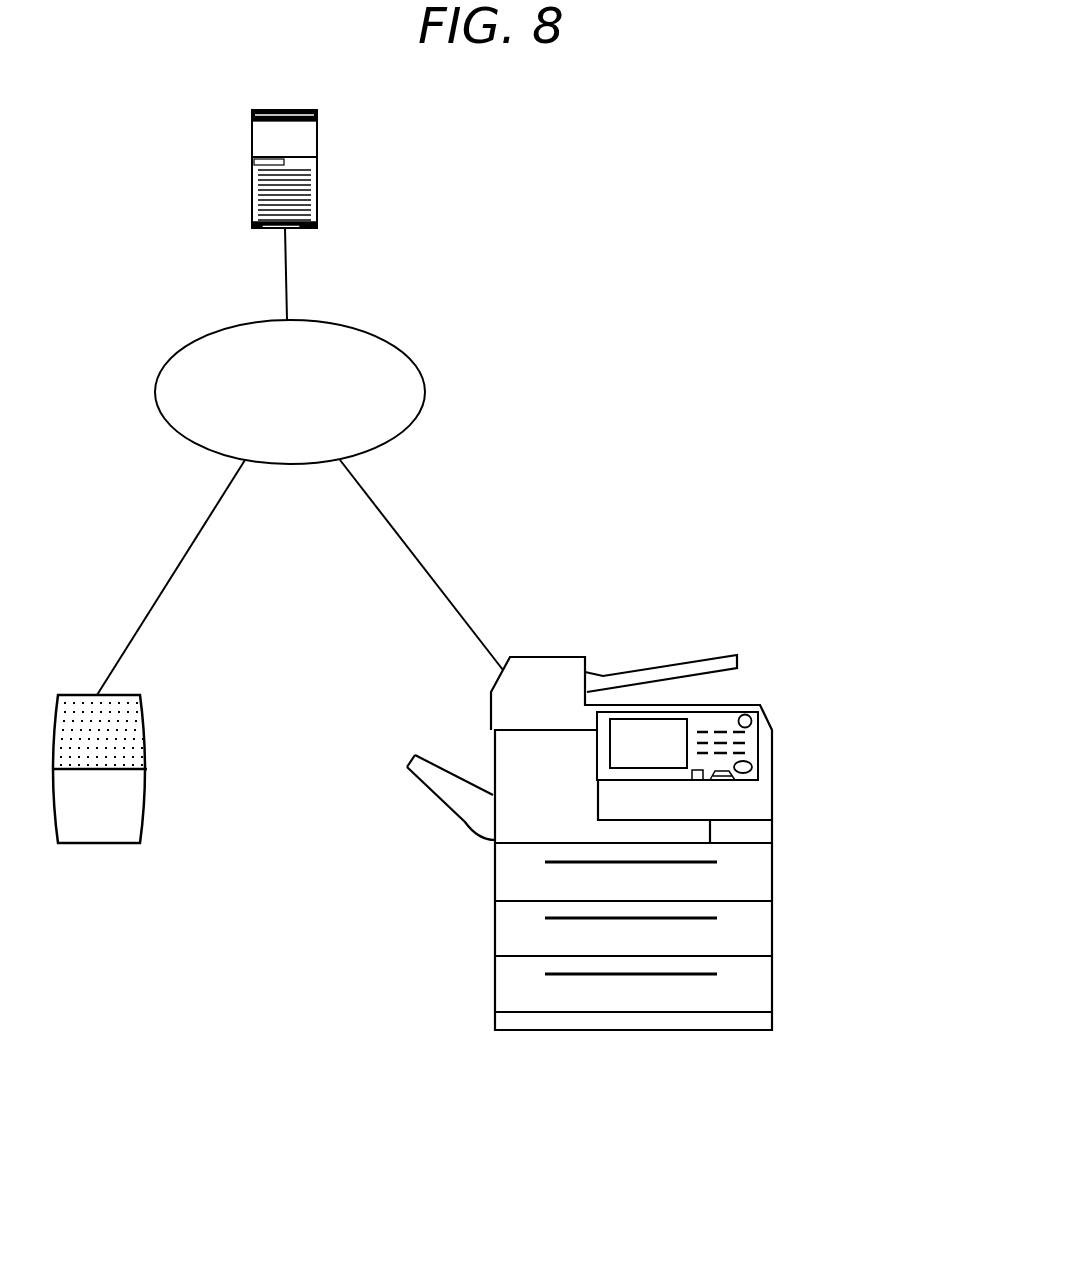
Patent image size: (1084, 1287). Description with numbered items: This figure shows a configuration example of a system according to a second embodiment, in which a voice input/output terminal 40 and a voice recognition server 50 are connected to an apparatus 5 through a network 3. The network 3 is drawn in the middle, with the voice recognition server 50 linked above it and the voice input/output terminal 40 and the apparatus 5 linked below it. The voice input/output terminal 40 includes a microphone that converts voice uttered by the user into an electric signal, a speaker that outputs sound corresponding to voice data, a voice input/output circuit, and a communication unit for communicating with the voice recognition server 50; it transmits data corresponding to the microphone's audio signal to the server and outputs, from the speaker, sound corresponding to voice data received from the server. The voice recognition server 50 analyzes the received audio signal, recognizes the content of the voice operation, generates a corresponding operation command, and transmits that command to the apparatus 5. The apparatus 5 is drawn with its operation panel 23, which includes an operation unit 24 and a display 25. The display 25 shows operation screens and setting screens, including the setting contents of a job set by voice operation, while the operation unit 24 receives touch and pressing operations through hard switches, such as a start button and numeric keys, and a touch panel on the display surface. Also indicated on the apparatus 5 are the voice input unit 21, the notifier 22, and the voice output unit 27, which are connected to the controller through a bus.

The network 3 is at (163, 364).
The apparatus 5 is at (680, 877).
The voice input unit 21 is at (698, 780).
The notifier 22 is at (760, 705).
The operation panel 23 is at (690, 712).
The operation unit 24 is at (747, 750).
The display 25 is at (634, 718).
The voice output unit 27 is at (723, 780).
The voice input/output terminal 40 is at (97, 843).
The voice recognition server 50 is at (317, 155).